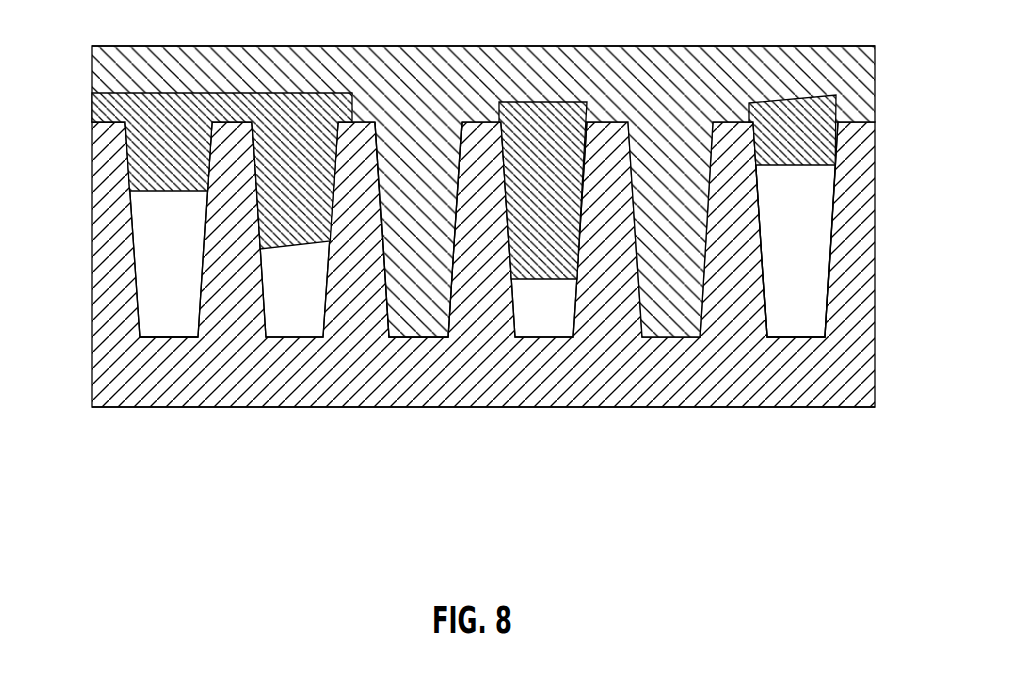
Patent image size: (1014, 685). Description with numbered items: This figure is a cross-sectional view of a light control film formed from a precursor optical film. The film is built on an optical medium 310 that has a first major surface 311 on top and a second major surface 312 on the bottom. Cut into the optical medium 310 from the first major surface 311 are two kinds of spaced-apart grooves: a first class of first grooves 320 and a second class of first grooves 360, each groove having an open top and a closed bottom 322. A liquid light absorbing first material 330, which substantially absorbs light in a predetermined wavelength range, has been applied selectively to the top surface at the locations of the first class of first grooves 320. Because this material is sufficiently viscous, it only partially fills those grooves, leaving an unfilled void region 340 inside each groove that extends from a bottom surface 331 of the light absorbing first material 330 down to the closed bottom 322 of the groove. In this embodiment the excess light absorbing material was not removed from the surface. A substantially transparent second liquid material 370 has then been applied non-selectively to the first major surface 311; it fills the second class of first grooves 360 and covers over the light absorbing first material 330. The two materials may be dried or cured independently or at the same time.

The optical medium 310 is at (112, 382).
The first major surface 311 is at (850, 62).
The second major surface 312 is at (860, 407).
The first class of first grooves 320 is at (187, 360).
The closed bottom 322 is at (162, 340).
The liquid light absorbing first material 330 is at (112, 67).
The bottom surface of the liquid first light absorbing material 331 is at (818, 167).
The unfilled void region 340 is at (815, 253).
The second class of first grooves 360 is at (434, 360).
The second liquid material 370 is at (372, 68).